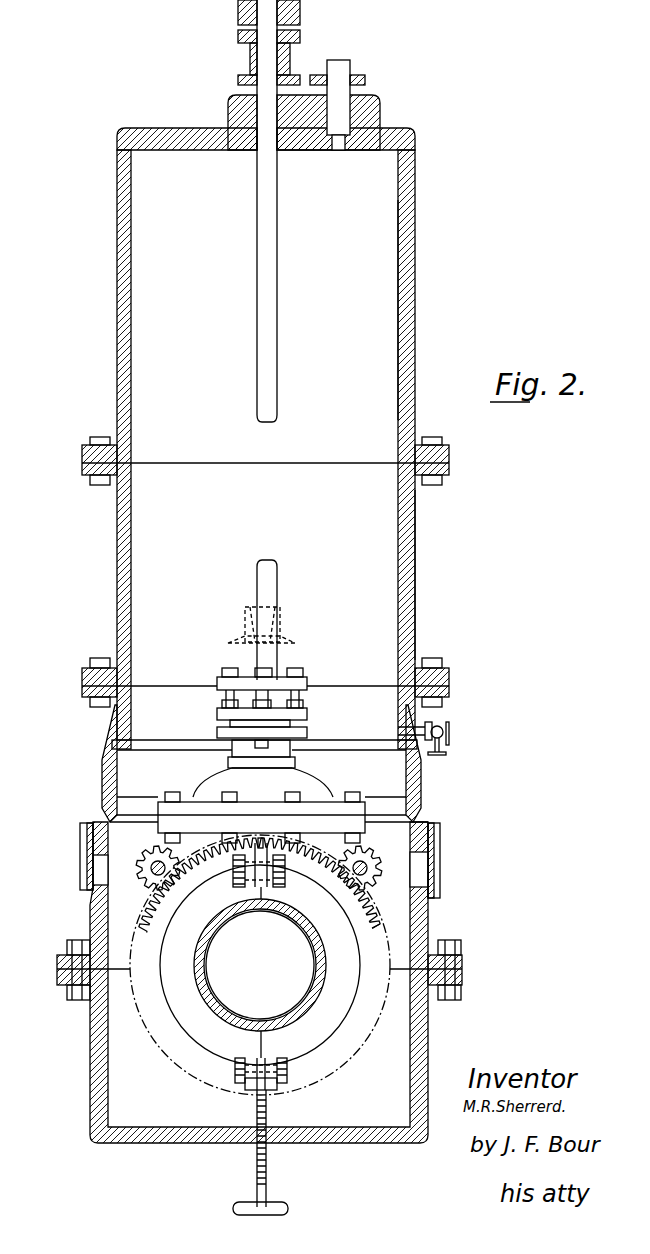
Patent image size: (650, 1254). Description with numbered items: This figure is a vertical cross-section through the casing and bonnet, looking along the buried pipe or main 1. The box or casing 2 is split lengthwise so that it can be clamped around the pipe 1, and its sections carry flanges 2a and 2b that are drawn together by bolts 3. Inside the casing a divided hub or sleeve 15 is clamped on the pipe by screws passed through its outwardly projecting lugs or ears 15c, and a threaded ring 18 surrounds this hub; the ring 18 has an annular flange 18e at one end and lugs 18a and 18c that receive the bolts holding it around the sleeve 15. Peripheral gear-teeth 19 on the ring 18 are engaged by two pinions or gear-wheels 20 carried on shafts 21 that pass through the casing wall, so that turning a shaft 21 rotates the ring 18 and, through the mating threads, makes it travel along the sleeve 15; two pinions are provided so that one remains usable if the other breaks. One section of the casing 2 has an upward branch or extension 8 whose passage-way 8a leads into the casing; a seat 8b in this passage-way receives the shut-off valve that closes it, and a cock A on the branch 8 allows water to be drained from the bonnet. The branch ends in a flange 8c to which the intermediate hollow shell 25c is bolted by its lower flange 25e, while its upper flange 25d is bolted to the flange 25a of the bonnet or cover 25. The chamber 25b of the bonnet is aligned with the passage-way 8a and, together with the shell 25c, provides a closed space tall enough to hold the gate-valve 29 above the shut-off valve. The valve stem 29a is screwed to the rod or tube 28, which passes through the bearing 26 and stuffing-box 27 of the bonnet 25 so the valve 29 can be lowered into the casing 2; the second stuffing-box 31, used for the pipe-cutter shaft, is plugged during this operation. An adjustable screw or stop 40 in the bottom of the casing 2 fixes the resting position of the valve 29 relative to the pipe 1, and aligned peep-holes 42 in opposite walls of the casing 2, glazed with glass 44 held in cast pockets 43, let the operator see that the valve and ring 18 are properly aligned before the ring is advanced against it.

The pipe or main 1 is at (260, 965).
The box or casing 2 is at (259, 982).
The flange 2a is at (241, 970).
The flange 2b is at (240, 950).
The bolts 3 is at (259, 985).
The branch or extension 8 is at (105, 750).
The passage-way 8a is at (136, 723).
The seat 8b is at (286, 734).
The flange 8c is at (449, 712).
The divided sleeve or hub 15 is at (260, 965).
The lugs or ears 15c is at (253, 876).
The ring 18 is at (150, 992).
The lugs 18a is at (270, 850).
The lugs 18c is at (240, 868).
The annular flange 18e is at (393, 915).
The peripheral gear-teeth 19 is at (160, 897).
The pinions or gear-wheels 20 is at (259, 872).
The shafts 21 is at (158, 870).
The bonnet or cover 25 is at (283, 434).
The flange 25a is at (449, 460).
The chamber 25b is at (354, 310).
The intermediate hollow case or shell 25c is at (435, 575).
The flange 25d is at (449, 478).
The flange 25e is at (447, 672).
The bearing 26 is at (255, 135).
The stuffing-box 27 is at (247, 46).
The rod or tube 28 is at (254, 393).
The valve 29 is at (263, 732).
The stem 29a is at (282, 661).
The stuffing-box 31 is at (353, 105).
The screw or stop 40 is at (245, 1152).
The peep-holes 42 is at (100, 870).
The pockets 43 is at (453, 848).
The glass 44 is at (86, 866).
The cock A is at (436, 738).